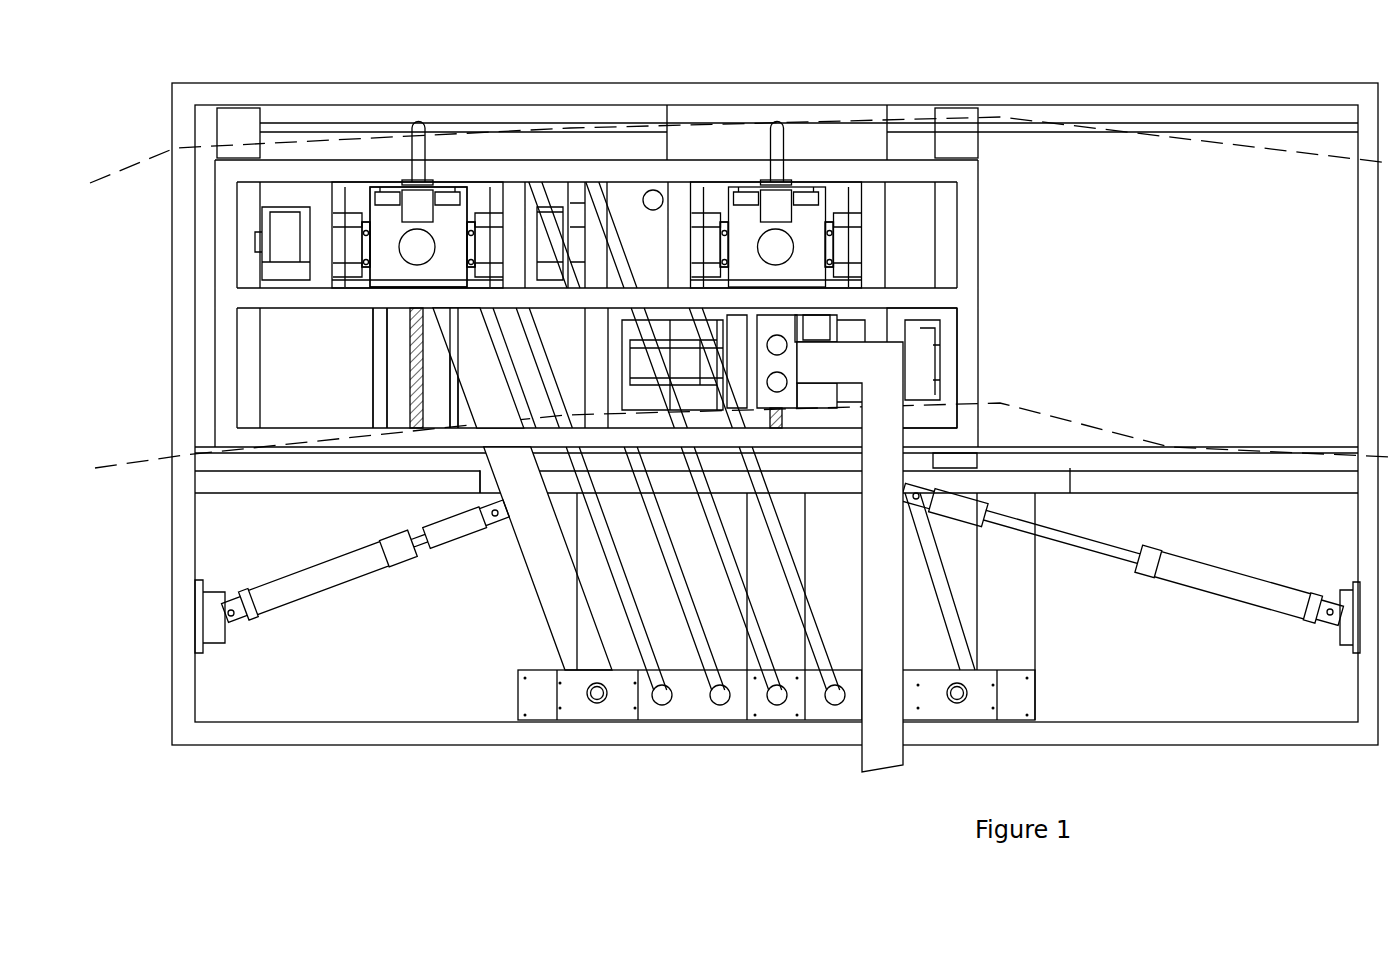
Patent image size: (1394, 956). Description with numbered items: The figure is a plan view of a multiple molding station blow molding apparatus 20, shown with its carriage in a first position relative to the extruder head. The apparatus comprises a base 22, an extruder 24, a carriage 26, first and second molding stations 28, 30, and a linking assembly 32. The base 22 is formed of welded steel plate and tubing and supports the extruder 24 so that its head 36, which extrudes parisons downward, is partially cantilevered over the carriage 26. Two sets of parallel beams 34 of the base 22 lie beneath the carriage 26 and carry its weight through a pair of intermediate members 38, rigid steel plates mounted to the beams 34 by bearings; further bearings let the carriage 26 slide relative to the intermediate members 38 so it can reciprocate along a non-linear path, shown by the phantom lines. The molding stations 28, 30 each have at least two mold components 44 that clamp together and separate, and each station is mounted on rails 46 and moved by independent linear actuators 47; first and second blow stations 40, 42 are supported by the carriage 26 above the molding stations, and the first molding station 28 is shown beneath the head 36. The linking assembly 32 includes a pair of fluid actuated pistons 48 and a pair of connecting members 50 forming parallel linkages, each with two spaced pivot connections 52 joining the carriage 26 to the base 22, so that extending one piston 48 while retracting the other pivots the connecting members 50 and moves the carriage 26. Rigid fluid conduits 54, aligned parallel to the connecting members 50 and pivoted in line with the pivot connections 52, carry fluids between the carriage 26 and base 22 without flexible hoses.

The blow molding apparatus 20 is at (486, 68).
The base 22 is at (162, 680).
The extruder 24 is at (903, 568).
The carriage 26 is at (592, 160).
The first molding station 28 is at (817, 310).
The second molding station 30 is at (354, 205).
The linking assembly 32 is at (505, 532).
The parallel beams 34 is at (280, 126).
The head 36 is at (777, 360).
The intermediate members 38 is at (230, 132).
The first blow station 40 is at (744, 222).
The second blow station 42 is at (458, 223).
The mold components 44 is at (385, 205).
The rails 46 is at (453, 392).
The linear actuators 47 is at (415, 408).
The pistons 48 is at (273, 603).
The connecting members 50 is at (528, 553).
The pivot connections 52 is at (597, 693).
The fluid conduits 54 is at (660, 210).